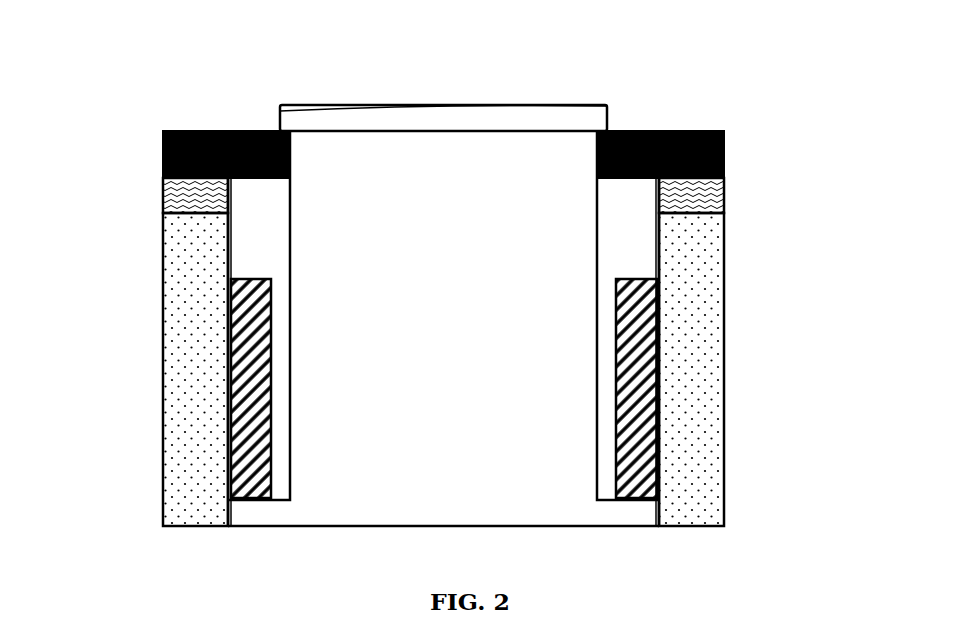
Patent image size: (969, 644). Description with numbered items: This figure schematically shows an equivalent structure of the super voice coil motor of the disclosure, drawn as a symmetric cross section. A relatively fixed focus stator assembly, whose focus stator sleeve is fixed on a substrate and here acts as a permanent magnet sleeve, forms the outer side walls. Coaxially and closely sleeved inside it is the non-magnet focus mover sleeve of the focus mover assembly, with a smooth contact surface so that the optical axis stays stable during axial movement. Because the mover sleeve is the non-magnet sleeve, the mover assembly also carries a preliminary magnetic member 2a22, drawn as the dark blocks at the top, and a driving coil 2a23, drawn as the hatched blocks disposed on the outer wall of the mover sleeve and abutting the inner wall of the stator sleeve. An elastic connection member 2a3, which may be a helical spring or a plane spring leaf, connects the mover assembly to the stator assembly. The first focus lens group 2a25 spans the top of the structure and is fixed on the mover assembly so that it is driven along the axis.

The preliminary magnetic member 2a22 is at (183, 165).
The elastic connection member 2a3 is at (708, 200).
The driving coil 2a23 is at (250, 473).
The first focus lens group 2a25 is at (549, 121).